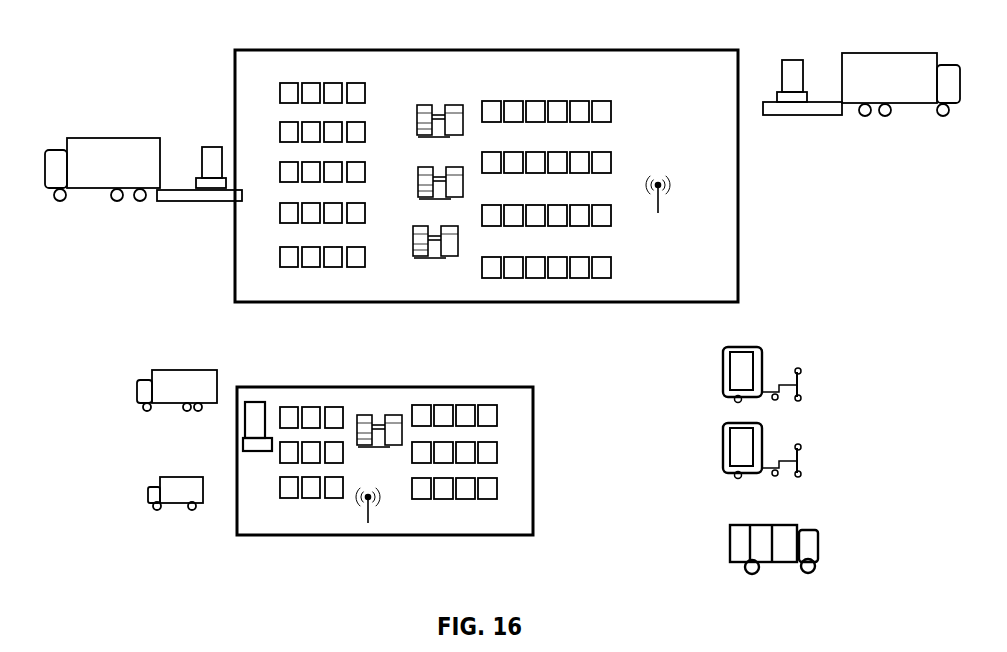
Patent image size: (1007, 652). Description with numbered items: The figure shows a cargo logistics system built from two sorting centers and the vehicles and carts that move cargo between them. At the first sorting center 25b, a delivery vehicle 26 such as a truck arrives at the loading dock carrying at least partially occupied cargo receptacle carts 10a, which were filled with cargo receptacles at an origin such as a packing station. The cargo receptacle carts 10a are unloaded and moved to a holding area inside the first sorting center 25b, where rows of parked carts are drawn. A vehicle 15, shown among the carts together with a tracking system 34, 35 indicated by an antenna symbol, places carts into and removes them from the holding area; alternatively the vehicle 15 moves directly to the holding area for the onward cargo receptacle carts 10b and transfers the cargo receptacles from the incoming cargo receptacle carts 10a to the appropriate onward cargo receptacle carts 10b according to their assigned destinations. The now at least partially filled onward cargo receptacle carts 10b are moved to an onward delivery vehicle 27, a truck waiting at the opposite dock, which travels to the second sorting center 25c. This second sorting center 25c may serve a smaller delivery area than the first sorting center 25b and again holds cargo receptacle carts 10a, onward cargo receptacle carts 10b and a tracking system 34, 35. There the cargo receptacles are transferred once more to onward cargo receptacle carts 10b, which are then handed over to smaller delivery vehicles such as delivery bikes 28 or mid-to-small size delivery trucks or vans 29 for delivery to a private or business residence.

The first sorting center 25b is at (277, 56).
The second sorting center 25c is at (380, 393).
The cargo receptacle cart 10a is at (208, 152).
The onward cargo receptacle cart 10b is at (798, 64).
The vehicle 15 is at (437, 127).
The delivery vehicle 26 is at (98, 141).
The onward delivery vehicle 27 is at (911, 64).
The delivery bike 28 is at (722, 384).
The delivery truck or van 29 is at (730, 546).
The tracking system 34 is at (541, 350).
The wireless antenna 35 is at (675, 188).